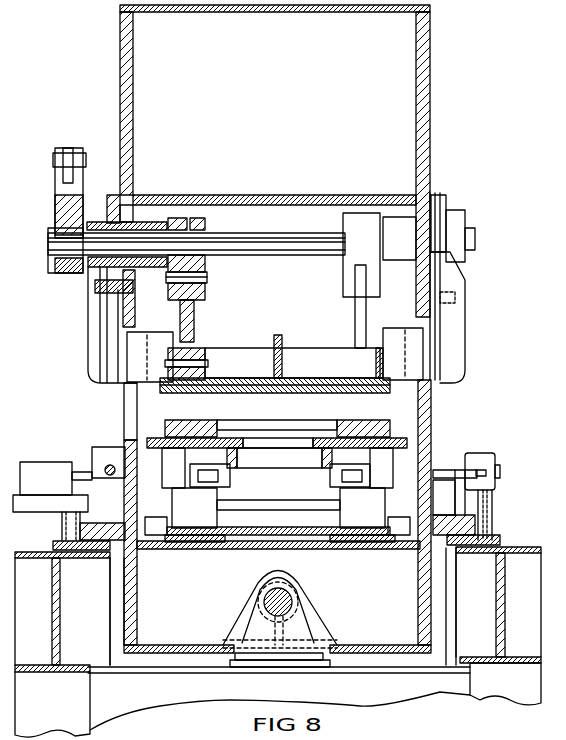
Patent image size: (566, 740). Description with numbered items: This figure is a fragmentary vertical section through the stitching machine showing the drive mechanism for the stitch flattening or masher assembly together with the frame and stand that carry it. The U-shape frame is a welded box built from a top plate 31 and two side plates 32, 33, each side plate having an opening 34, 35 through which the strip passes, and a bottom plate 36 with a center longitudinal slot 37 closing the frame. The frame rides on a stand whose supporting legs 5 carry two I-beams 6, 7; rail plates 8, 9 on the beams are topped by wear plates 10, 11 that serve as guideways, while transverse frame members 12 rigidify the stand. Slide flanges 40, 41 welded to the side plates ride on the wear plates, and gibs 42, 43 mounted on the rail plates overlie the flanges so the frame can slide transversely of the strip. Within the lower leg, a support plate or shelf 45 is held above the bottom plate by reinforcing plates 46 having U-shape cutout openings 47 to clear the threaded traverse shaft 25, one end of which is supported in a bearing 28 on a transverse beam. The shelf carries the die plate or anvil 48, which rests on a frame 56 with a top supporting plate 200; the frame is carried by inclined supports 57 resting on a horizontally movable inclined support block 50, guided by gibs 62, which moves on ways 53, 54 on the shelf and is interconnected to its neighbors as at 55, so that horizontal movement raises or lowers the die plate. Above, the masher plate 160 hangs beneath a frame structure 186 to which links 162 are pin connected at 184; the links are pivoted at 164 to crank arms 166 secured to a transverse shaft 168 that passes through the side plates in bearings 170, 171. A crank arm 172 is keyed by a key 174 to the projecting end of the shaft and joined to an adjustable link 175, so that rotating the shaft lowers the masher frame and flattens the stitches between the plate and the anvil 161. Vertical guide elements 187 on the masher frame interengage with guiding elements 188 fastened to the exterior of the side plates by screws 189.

The top plate 31 is at (297, 8).
The side plate 32 is at (133, 100).
The side plate 33 is at (430, 87).
The transverse shaft 168 is at (310, 250).
The key 174 is at (52, 262).
The crank arm 172 is at (55, 203).
The adjustable link 175 is at (68, 148).
The bearing 170 is at (88, 268).
The screw 189 is at (95, 292).
The guiding element 188 is at (92, 370).
The crank arm 166 is at (205, 266).
The pivot 164 is at (207, 283).
The link 162 is at (194, 326).
The pin connection 184 is at (207, 360).
The guide element 187 is at (160, 342).
The frame structure 186 is at (285, 350).
The bearing 171 is at (456, 215).
The masher plate 160 is at (258, 392).
The anvil 161 is at (192, 420).
The die plate 48 is at (366, 410).
The opening 34 is at (125, 420).
The opening 35 is at (431, 414).
The bottom plate 36 is at (173, 645).
The top supporting plate 200 is at (400, 440).
The frame 56 is at (287, 468).
The inclined support 57 is at (165, 485).
The inclined support block 50 is at (212, 502).
The interconnection 55 is at (310, 492).
The gib 62 is at (152, 520).
The way 53 is at (190, 550).
The support plate 45 is at (241, 550).
The way 54 is at (376, 548).
The gib 42 is at (60, 512).
The slide flange 40 is at (108, 523).
The rail plate 8 is at (55, 545).
The I-beam 6 is at (60, 606).
The wear plate 10 is at (106, 611).
The supporting leg 5 is at (20, 698).
The reinforcing plate 46 is at (392, 640).
The transverse frame member 12 is at (440, 693).
The I-beam 7 is at (505, 600).
The wear plate 11 is at (447, 548).
The rail plate 9 is at (505, 546).
The slide flange 41 is at (454, 502).
The gib 43 is at (497, 508).
The center longitudinal slot 37 is at (232, 642).
The U-shape cutout opening 47 is at (315, 613).
The traverse shaft 25 is at (292, 598).
The bearing 28 is at (310, 626).